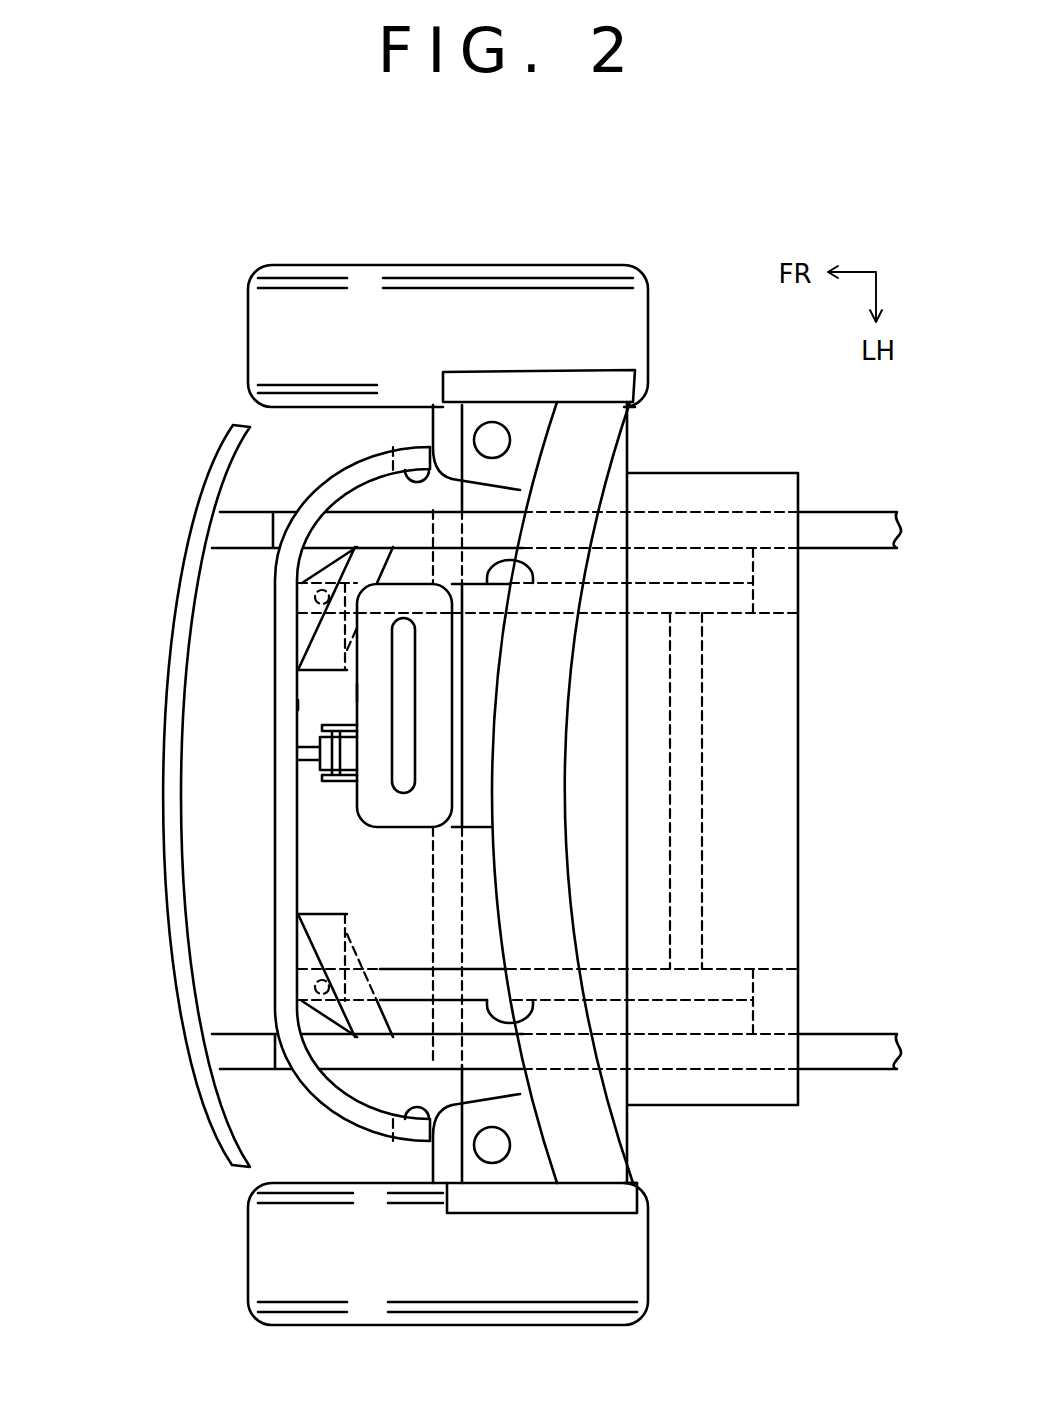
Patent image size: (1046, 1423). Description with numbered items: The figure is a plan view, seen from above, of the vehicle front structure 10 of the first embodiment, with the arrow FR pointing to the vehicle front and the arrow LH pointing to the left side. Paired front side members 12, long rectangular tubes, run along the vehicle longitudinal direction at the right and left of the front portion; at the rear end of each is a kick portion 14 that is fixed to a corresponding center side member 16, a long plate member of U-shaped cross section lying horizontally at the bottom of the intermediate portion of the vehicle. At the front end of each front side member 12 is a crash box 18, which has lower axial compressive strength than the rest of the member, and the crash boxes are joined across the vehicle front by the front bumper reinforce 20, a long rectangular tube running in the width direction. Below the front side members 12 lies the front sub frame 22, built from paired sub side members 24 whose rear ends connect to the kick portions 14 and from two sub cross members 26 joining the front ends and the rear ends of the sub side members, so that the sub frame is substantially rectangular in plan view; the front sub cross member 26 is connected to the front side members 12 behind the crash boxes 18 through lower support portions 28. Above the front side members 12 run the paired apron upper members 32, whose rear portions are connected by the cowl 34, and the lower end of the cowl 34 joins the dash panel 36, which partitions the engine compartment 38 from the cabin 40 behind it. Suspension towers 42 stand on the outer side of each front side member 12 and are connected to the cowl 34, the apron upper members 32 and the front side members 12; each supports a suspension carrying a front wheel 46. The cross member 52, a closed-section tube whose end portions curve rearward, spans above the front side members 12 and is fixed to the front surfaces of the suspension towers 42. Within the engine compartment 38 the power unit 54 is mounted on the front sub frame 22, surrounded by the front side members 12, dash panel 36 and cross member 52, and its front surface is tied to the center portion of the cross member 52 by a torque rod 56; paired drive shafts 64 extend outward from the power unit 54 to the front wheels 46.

The vehicle front structure 10 is at (144, 407).
The front side member 12 is at (303, 496).
The kick portion 14 is at (770, 533).
The center side member 16 is at (850, 520).
The crash box 18 is at (234, 532).
The front bumper reinforce 20 is at (167, 795).
The front sub frame 22 is at (478, 568).
The sub side member 24 is at (533, 583).
The sub cross member 26 is at (317, 871).
The lower support portion 28 is at (330, 647).
The apron upper member 32 is at (525, 371).
The cowl 34 is at (500, 910).
The dash panel 36 is at (767, 717).
The engine compartment 38 is at (413, 884).
The cabin 40 is at (890, 823).
The suspension tower 42 is at (475, 413).
The front wheel 46 is at (248, 330).
The cross member 52 is at (275, 798).
The power unit 54 is at (357, 693).
The torque rod 56 is at (320, 740).
The drive shaft 64 is at (395, 450).